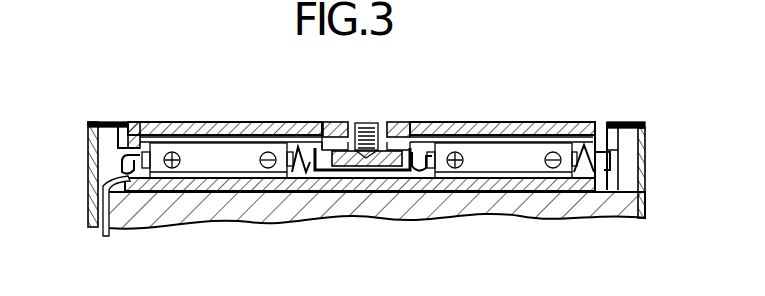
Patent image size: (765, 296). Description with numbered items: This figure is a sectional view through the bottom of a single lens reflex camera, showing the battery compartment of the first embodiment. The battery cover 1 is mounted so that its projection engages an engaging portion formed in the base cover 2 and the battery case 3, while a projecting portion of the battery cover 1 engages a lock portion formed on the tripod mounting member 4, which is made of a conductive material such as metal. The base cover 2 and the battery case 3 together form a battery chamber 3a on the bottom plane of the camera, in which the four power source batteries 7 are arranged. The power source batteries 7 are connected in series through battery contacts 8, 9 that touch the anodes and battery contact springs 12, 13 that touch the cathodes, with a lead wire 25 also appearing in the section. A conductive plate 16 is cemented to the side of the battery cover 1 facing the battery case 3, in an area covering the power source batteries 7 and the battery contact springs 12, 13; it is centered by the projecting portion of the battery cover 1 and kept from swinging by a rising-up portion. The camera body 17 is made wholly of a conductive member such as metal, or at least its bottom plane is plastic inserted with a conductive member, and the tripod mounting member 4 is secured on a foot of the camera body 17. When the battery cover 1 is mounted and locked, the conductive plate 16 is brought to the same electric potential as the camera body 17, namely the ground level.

The battery cover 1 is at (262, 140).
The base cover 2 is at (613, 127).
The battery case 3 is at (197, 181).
The battery chamber 3a is at (303, 146).
The tripod mounting member 4 is at (348, 160).
The power source batteries 7 is at (193, 152).
The battery contact 8 is at (120, 160).
The battery contact 9 is at (427, 168).
The battery contact spring 12 is at (302, 175).
The battery contact spring 13 is at (589, 174).
The conductive plate 16 is at (225, 133).
The camera body 17 is at (474, 213).
The lead wire 25 is at (116, 182).